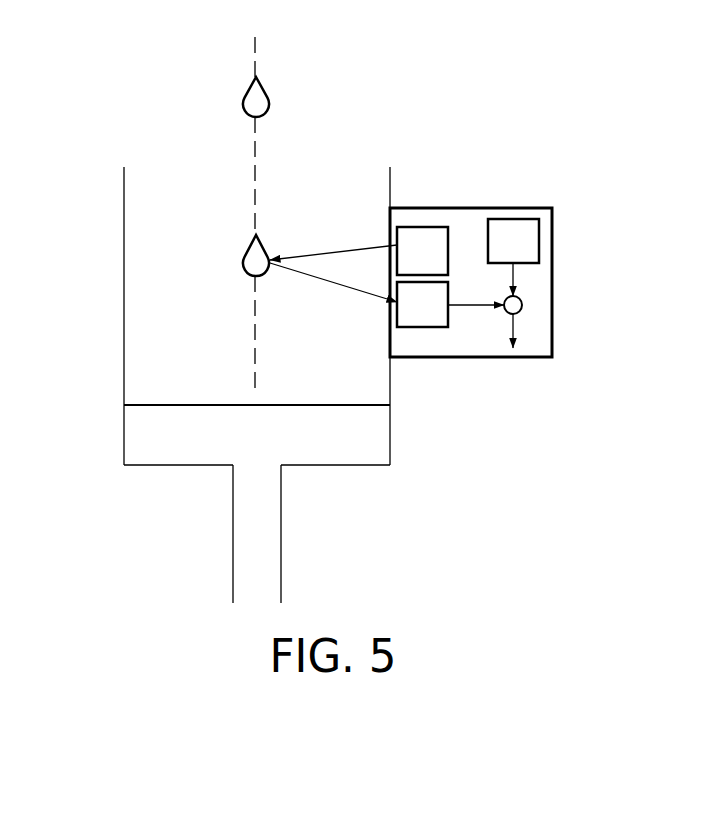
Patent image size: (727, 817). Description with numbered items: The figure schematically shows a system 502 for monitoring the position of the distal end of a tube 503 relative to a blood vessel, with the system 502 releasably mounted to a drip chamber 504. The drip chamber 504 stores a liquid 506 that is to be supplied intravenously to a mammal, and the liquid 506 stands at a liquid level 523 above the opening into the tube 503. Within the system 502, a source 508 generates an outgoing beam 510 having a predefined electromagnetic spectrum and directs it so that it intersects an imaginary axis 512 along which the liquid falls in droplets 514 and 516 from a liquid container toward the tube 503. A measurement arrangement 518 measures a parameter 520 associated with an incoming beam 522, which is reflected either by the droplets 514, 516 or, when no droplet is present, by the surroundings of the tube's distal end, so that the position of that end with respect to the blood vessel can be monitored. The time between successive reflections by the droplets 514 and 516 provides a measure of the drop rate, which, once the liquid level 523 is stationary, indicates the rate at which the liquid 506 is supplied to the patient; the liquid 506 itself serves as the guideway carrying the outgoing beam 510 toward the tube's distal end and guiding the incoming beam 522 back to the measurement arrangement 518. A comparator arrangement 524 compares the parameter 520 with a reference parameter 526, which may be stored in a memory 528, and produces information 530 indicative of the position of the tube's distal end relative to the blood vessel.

The system 502 is at (47, 182).
The tube 503 is at (281, 505).
The drip chamber 504 is at (124, 297).
The liquid 506 is at (194, 450).
The source 508 is at (404, 262).
The outgoing beam 510 is at (329, 285).
The imaginary axis 512 is at (255, 184).
The droplet 514 is at (251, 261).
The droplet 516 is at (251, 103).
The measurement arrangement 518 is at (404, 316).
The parameter 520 is at (465, 307).
The incoming beam 522 is at (338, 250).
The liquid level 523 is at (187, 404).
The comparator arrangement 524 is at (522, 301).
The reference parameter 526 is at (516, 275).
The memory 528 is at (496, 252).
The information 530 is at (516, 328).